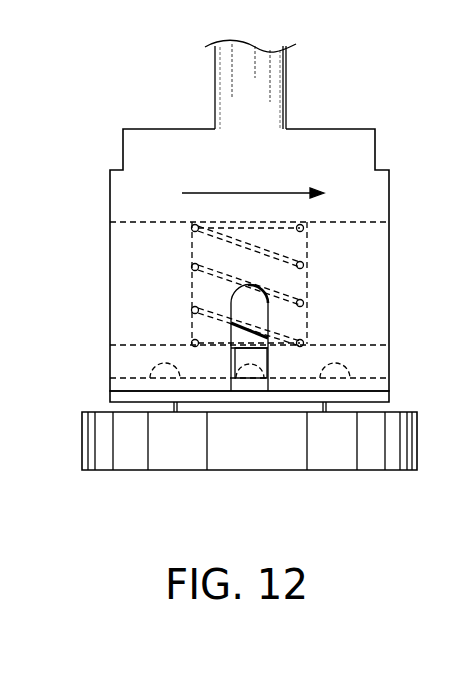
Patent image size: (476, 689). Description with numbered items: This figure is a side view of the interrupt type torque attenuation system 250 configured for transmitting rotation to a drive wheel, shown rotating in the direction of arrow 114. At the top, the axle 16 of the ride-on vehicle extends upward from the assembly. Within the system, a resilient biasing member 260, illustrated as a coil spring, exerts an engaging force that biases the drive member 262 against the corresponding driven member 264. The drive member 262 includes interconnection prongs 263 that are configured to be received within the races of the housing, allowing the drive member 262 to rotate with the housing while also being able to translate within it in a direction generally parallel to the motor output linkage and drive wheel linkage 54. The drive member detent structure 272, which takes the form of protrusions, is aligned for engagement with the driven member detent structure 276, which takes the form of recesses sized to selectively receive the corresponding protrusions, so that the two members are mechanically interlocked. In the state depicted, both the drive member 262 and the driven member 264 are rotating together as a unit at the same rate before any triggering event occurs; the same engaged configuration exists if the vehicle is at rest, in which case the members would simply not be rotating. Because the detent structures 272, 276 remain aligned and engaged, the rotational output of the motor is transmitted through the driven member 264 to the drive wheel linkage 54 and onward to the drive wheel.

The attenuation system 250 is at (93, 131).
The axle 16 is at (280, 97).
The arrow 114 is at (322, 195).
The drive member 262 is at (115, 365).
The biasing member 260 is at (303, 303).
The interconnection prongs 263 is at (245, 355).
The drive member detent structure 272 is at (167, 363).
The driven member detent structure 276 is at (155, 365).
The driven member 264 is at (155, 387).
The drive wheel linkage 54 is at (312, 460).